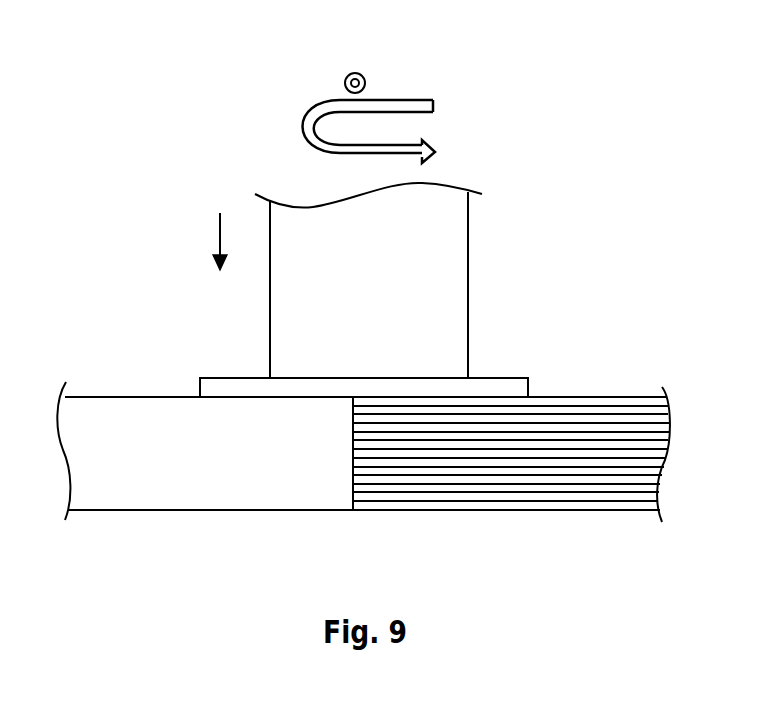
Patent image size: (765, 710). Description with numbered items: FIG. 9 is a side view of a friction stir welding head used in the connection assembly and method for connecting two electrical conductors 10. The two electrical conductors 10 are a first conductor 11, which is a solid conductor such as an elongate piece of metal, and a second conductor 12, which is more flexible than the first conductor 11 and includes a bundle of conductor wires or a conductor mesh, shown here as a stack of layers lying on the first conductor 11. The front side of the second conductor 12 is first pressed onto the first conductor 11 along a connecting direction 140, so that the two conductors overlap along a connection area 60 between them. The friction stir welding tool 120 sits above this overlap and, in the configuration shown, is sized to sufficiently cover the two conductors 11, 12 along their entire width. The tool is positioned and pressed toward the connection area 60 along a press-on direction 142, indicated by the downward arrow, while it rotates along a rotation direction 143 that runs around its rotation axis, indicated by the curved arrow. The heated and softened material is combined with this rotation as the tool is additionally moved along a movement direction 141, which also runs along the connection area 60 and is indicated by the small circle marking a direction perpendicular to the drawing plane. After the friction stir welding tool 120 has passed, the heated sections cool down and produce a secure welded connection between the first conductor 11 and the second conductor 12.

The movement direction 141 is at (350, 73).
The rotation direction 143 is at (408, 99).
The press-on direction 142 is at (218, 240).
The friction stir welding tool 120 is at (310, 315).
The connecting direction 140 is at (493, 380).
The first conductor 11 is at (93, 413).
The electrical conductor 10 is at (152, 402).
The second conductor 12 is at (597, 413).
The connection area 60 is at (353, 512).